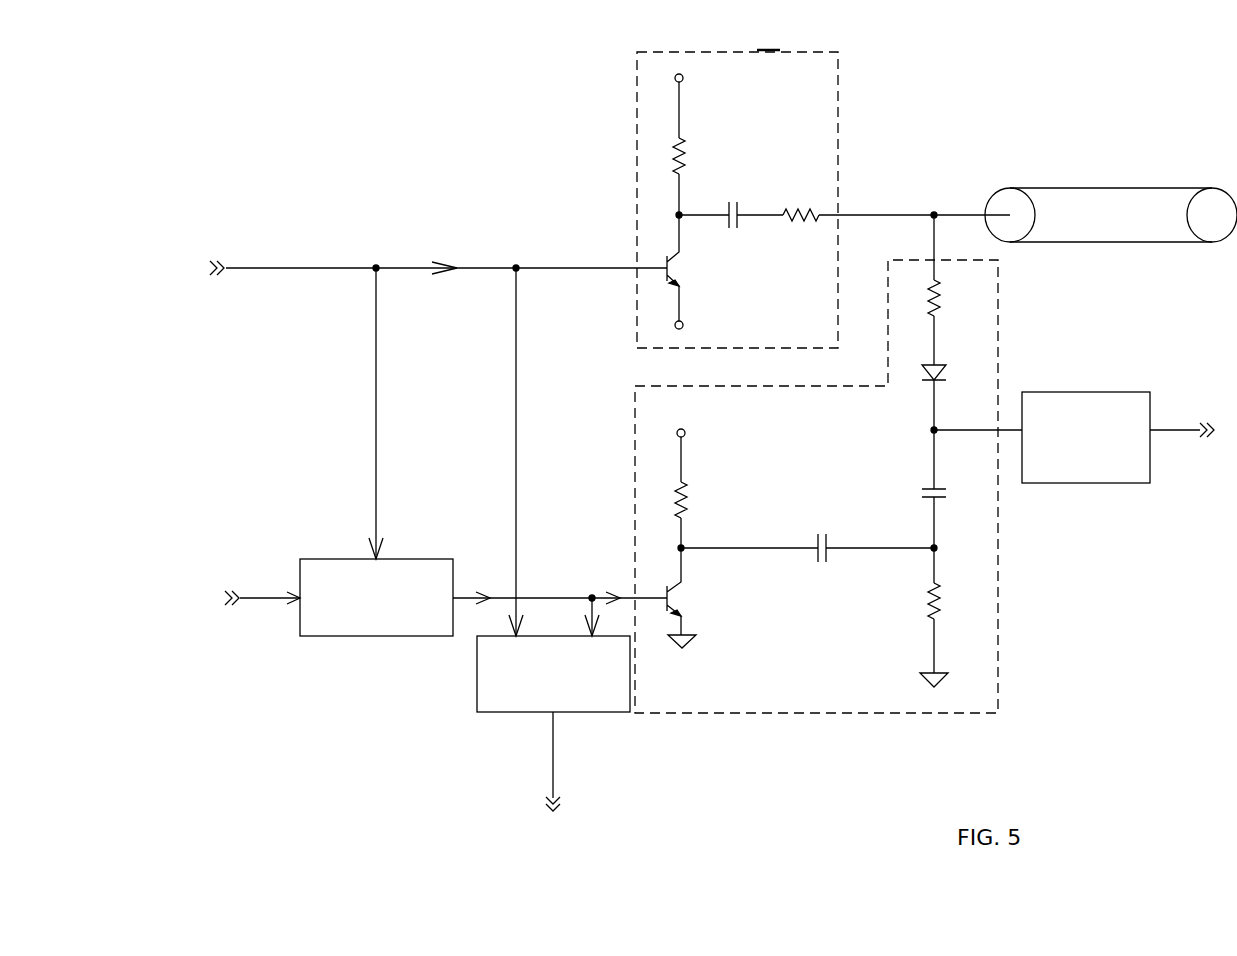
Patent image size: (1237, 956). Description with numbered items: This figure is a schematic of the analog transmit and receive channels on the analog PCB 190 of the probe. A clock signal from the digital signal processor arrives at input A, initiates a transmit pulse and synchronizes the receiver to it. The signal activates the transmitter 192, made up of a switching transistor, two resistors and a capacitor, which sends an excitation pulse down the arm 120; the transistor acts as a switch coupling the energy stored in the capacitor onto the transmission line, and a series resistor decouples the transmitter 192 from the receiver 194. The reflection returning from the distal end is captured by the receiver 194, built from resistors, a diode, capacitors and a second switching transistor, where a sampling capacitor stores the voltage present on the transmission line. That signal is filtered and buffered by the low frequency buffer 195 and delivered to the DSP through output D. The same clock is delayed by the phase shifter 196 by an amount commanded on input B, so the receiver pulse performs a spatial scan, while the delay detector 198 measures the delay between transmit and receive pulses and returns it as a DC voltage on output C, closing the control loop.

The analog PCB 190 is at (288, 172).
The arm 120 is at (1098, 189).
The transmitter 192 is at (637, 140).
The receiver 194 is at (775, 713).
The low frequency buffer 195 is at (1091, 484).
The phase shifter 196 is at (398, 558).
The delay detector 198 is at (510, 713).